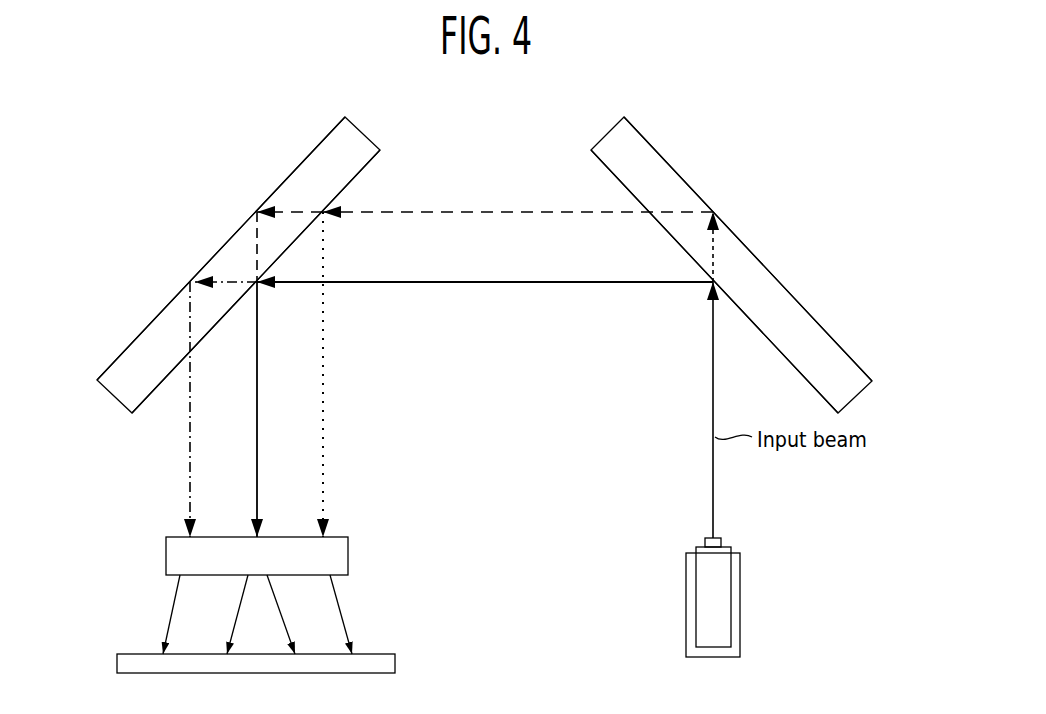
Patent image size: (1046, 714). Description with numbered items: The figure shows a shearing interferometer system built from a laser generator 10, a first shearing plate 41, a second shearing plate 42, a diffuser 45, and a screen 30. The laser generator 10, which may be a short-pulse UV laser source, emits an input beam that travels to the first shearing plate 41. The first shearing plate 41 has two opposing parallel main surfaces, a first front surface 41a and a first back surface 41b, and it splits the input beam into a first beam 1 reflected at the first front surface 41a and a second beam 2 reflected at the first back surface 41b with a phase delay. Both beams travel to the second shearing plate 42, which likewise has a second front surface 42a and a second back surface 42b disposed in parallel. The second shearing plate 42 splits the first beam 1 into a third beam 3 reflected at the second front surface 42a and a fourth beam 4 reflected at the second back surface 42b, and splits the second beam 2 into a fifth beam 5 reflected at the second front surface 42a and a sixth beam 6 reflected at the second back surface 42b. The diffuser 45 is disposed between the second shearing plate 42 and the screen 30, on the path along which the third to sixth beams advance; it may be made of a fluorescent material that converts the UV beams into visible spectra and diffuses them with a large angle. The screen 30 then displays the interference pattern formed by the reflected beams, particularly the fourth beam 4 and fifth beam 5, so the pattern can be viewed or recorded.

The first beam 1 is at (565, 285).
The second beam 2 is at (540, 210).
The third beam 3 is at (256, 458).
The fourth beam 4 is at (188, 470).
The fifth beam 5 is at (325, 356).
The sixth beam 6 is at (256, 238).
The laser generator 10 is at (740, 597).
The screen 30 is at (117, 660).
The first shearing plate 41 is at (815, 322).
The first front surface 41a is at (603, 168).
The first back surface 41b is at (667, 162).
The second shearing plate 42 is at (152, 322).
The second front surface 42a is at (362, 170).
The second back surface 42b is at (318, 146).
The diffuser 45 is at (166, 555).